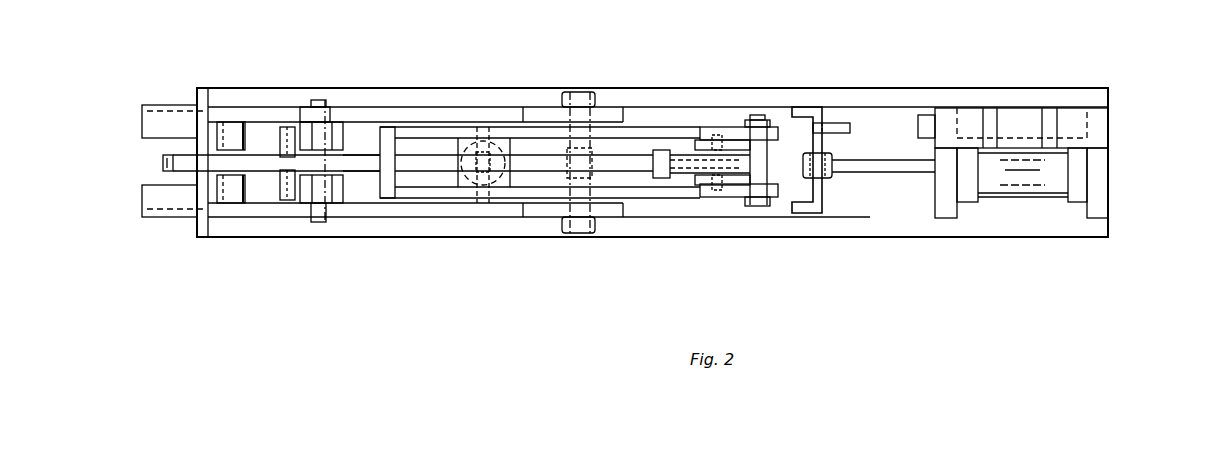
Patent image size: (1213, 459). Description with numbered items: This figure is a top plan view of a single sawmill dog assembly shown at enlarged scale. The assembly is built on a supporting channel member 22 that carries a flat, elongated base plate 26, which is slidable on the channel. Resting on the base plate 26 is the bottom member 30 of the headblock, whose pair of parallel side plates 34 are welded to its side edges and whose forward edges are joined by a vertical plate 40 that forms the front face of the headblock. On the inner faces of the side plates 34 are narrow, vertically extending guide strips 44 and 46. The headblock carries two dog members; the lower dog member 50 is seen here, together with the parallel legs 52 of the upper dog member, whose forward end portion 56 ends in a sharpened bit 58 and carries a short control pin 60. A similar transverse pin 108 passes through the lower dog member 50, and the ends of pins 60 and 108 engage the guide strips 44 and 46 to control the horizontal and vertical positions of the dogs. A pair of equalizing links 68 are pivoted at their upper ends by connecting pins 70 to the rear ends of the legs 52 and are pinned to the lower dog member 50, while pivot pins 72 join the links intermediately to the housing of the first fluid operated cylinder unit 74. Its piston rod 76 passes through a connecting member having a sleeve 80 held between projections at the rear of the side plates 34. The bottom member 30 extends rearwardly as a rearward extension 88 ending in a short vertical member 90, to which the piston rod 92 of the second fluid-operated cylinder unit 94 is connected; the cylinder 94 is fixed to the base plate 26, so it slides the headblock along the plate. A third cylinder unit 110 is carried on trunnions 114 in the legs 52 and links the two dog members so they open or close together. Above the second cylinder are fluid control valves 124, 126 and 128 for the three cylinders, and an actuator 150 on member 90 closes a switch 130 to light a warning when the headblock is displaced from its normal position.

The supporting channel member 22 is at (150, 108).
The base plate 26 is at (222, 97).
The bottom member 30 is at (380, 105).
The side plates 34 is at (263, 112).
The vertical plate 40 is at (210, 110).
The guide strip 44 is at (232, 130).
The guide strip 46 is at (360, 135).
The lower dog member 50 is at (410, 163).
The legs 52 is at (533, 132).
The forward end portion 56 is at (350, 165).
The sharpened bit 58 is at (162, 158).
The pin 60 is at (288, 190).
The equalizing links 68 is at (703, 145).
The connecting pins 70 is at (758, 118).
The pivot pins 72 is at (715, 138).
The first fluid operated cylinder unit 74 is at (683, 163).
The piston rod 76 is at (633, 163).
The sleeve 80 is at (593, 180).
The rearward extension 88 is at (788, 203).
The vertical member 90 is at (825, 125).
The piston rod 92 is at (855, 162).
The second fluid-operated cylinder unit 94 is at (1042, 170).
The transverse pin 108 is at (318, 102).
The third fluid operated cylinder unit 110 is at (498, 148).
The trunnions 114 is at (487, 203).
The fluid control valve 124 is at (967, 115).
The fluid control valve 126 is at (1020, 120).
The fluid control valve 128 is at (1078, 120).
The switch 130 is at (928, 120).
The actuator 150 is at (868, 88).